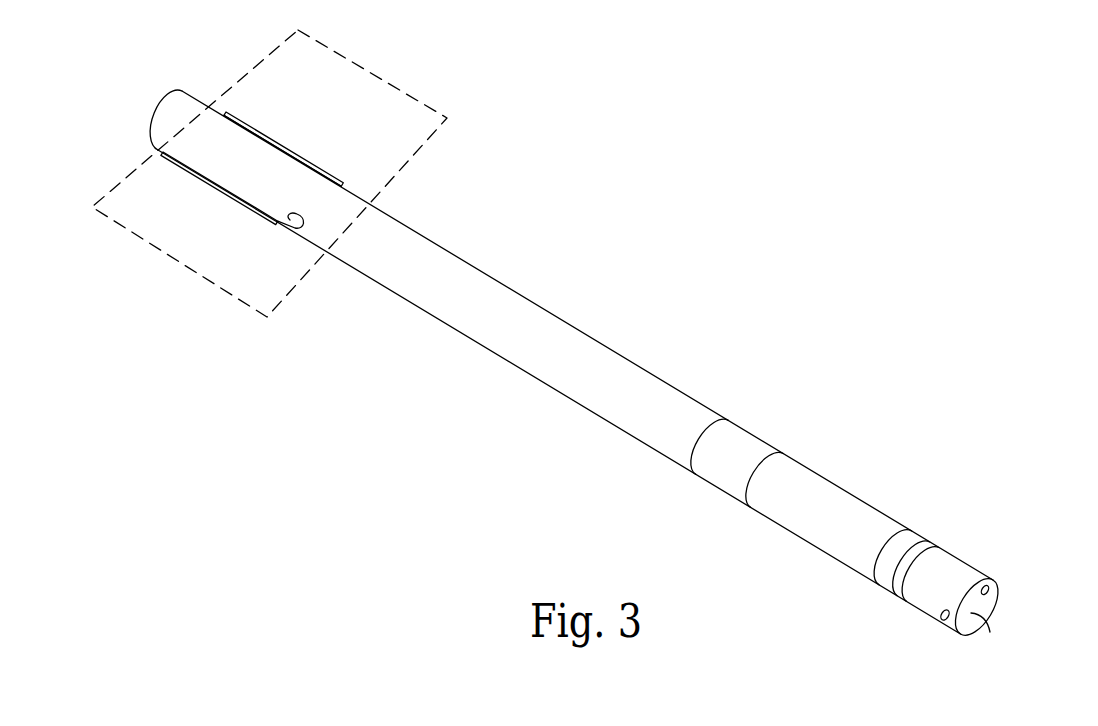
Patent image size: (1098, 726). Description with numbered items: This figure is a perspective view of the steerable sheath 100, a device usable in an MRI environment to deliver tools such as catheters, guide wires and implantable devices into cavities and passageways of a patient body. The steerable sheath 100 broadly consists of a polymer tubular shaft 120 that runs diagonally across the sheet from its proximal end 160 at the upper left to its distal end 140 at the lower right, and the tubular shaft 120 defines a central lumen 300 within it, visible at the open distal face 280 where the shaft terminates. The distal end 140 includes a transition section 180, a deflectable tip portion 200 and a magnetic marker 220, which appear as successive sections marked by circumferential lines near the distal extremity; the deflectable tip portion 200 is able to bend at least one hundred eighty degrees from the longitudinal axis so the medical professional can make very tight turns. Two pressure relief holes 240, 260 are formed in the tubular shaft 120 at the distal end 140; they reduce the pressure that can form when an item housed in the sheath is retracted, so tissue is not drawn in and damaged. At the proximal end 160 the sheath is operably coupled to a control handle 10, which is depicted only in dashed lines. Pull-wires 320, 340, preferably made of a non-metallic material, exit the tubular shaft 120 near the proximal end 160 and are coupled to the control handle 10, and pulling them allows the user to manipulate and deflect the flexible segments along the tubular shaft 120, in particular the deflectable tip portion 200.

The control handle 10 is at (392, 90).
The steerable sheath 100 is at (718, 310).
The tubular shaft 120 is at (508, 289).
The distal end 140 is at (943, 533).
The proximal end 160 is at (293, 148).
The transition section 180 is at (758, 439).
The deflectable tip portion 200 is at (843, 491).
The magnetic marker 220 is at (897, 603).
The pressure relief hole 240 is at (988, 587).
The pressure relief hole 260 is at (937, 623).
The end face 280 is at (997, 617).
The central lumen 300 is at (973, 617).
The pull-wire 320 is at (323, 168).
The pull-wire 340 is at (240, 205).